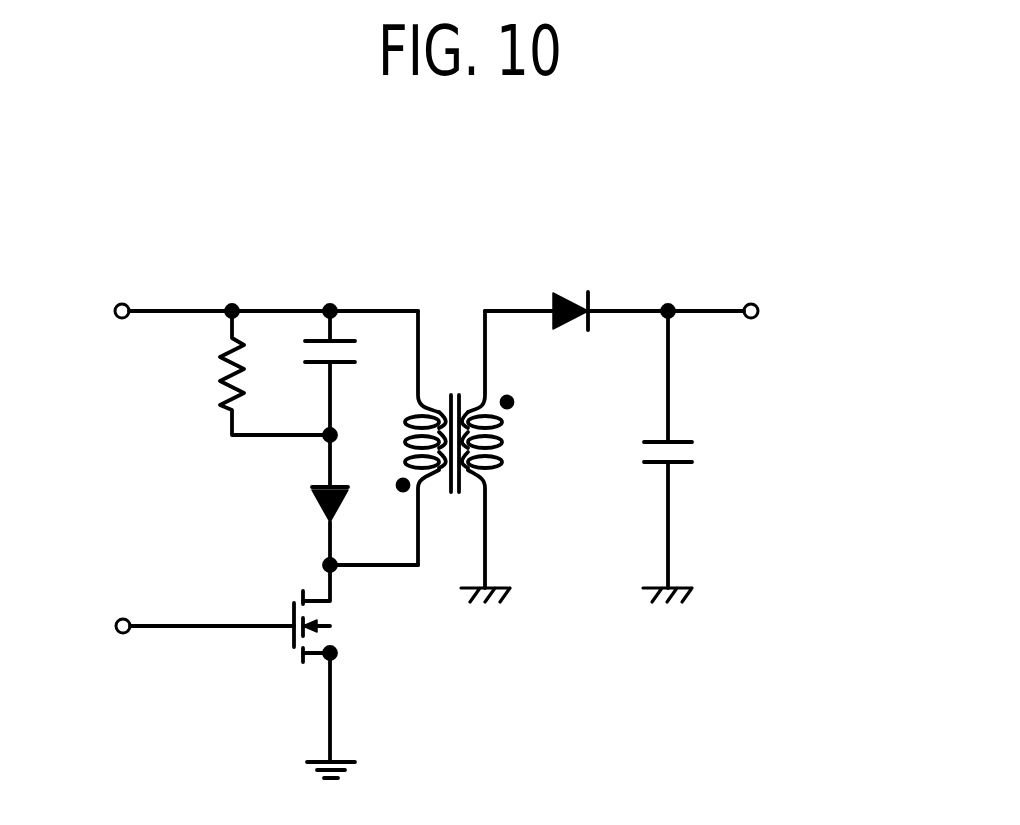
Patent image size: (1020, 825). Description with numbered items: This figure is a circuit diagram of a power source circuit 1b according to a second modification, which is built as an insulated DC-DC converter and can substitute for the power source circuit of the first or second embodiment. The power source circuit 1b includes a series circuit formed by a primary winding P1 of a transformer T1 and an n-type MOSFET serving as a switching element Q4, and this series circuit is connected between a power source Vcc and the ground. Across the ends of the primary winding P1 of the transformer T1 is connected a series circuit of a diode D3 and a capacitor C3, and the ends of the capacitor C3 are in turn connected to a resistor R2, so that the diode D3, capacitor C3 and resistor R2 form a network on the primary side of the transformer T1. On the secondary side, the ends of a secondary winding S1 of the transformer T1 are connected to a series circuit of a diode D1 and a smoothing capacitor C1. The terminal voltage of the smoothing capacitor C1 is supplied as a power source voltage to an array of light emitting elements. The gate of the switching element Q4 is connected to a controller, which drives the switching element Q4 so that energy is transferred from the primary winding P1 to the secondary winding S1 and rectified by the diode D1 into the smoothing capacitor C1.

The power source circuit 1b is at (727, 266).
The power source Vcc is at (226, 307).
The resistor R2 is at (245, 373).
The capacitor C3 is at (310, 376).
The diode D3 is at (298, 503).
The switching element Q4 is at (262, 671).
The transformer T1 is at (458, 428).
The primary winding P1 is at (400, 438).
The secondary winding S1 is at (511, 456).
The diode D1 is at (576, 284).
The smoothing capacitor C1 is at (638, 456).